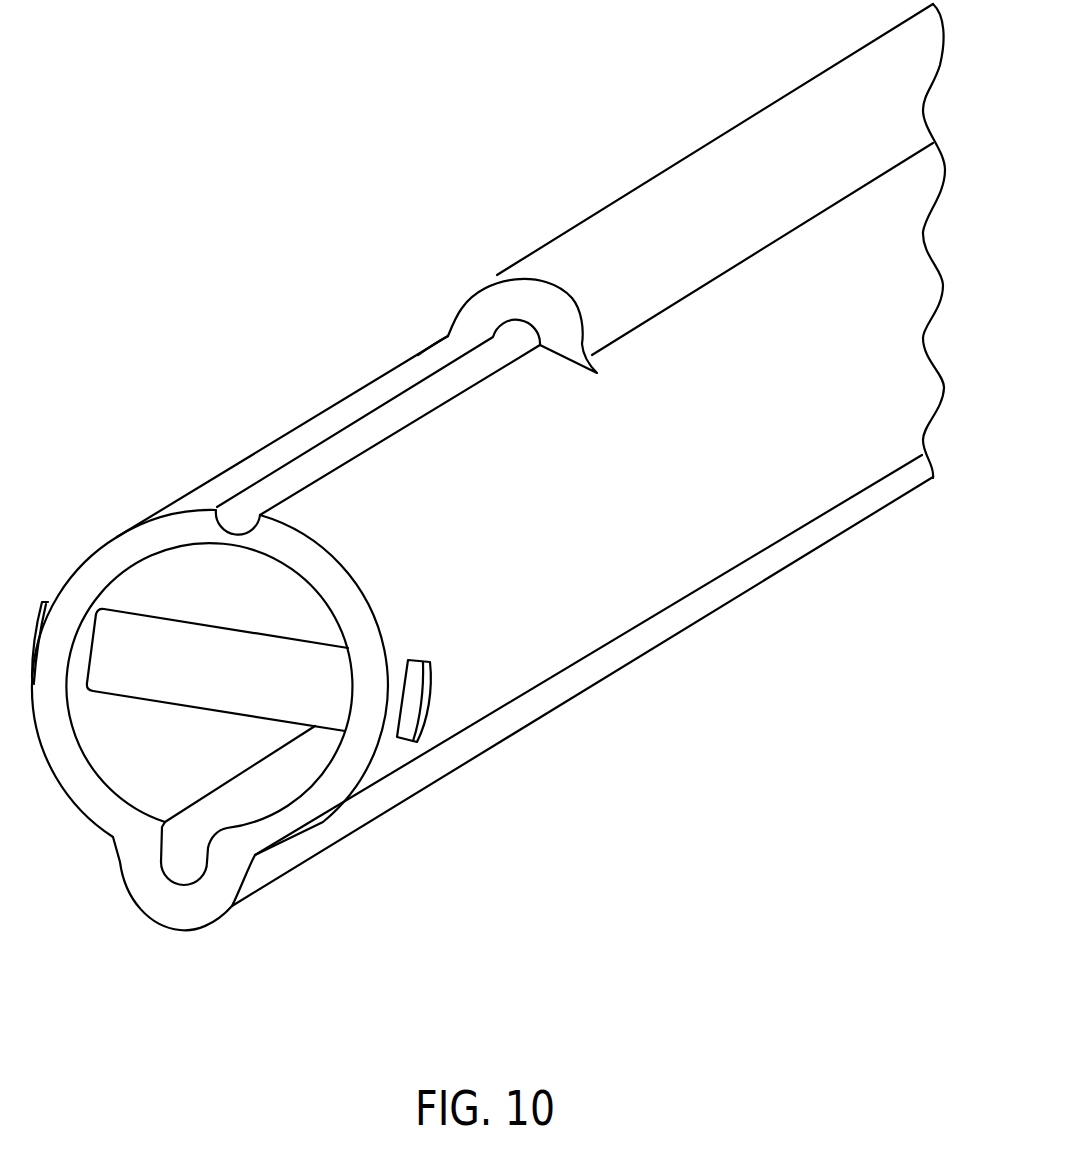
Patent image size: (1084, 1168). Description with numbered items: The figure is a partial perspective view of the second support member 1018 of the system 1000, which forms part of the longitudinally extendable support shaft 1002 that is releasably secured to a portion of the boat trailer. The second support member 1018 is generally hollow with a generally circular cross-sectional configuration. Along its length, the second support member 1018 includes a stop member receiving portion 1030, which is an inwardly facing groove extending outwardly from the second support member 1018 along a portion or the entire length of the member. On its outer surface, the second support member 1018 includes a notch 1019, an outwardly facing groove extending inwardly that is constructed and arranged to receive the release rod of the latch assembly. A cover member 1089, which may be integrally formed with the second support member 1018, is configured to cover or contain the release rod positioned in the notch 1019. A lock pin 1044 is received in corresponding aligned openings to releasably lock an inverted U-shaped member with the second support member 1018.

The system 1000 is at (553, 92).
The longitudinally extendable support shaft 1002 is at (700, 144).
The second support member 1018 is at (238, 459).
The notch 1019 is at (328, 455).
The stop member receiving portion 1030 is at (172, 865).
The lock pin 1044 is at (252, 689).
The cover member 1089 is at (562, 256).